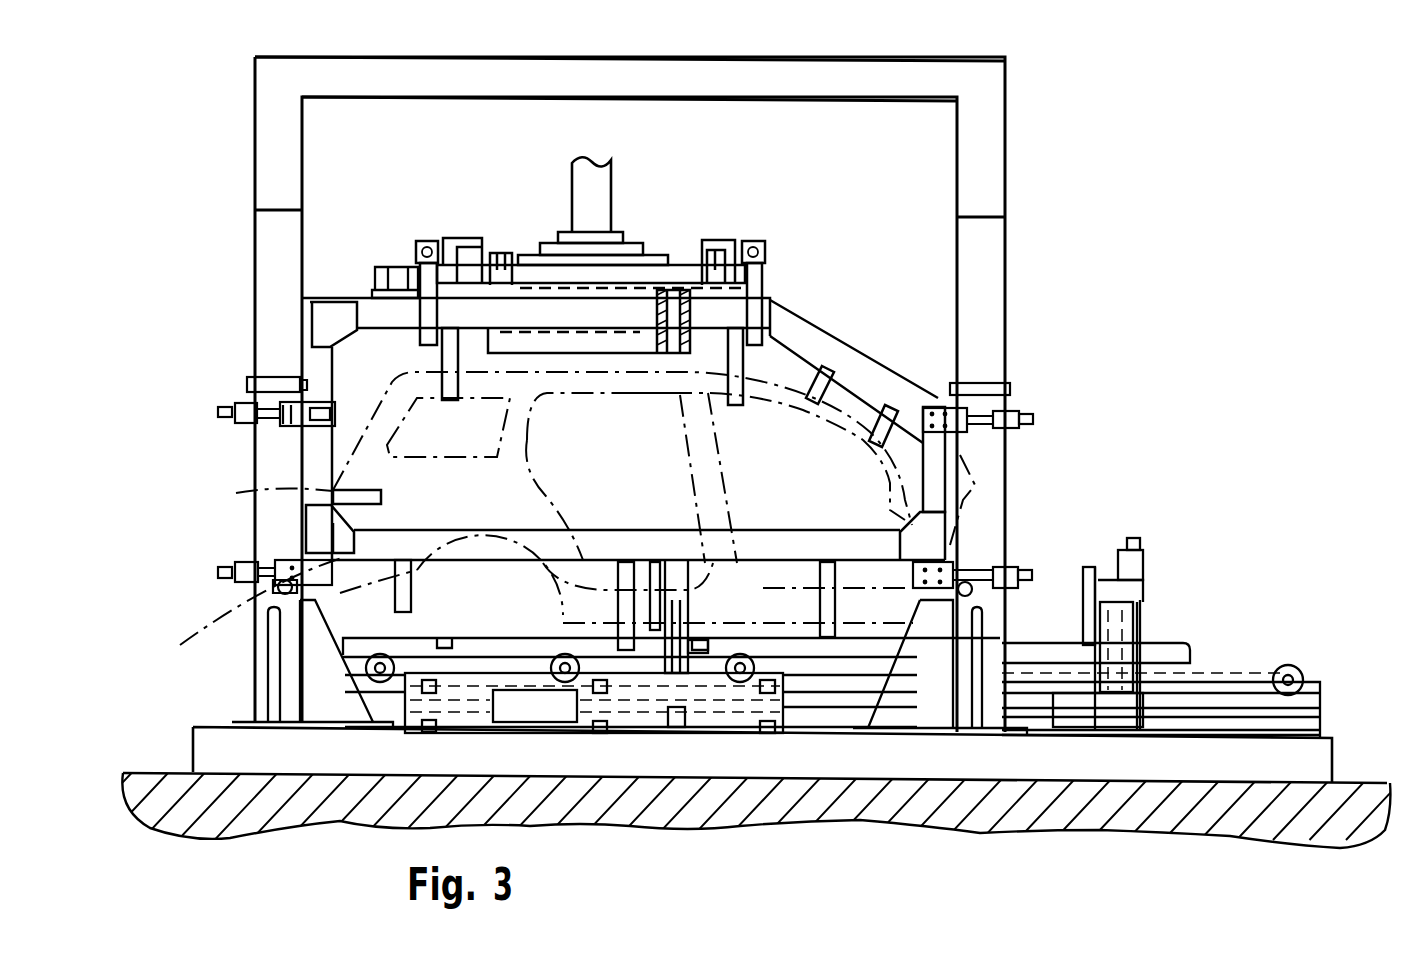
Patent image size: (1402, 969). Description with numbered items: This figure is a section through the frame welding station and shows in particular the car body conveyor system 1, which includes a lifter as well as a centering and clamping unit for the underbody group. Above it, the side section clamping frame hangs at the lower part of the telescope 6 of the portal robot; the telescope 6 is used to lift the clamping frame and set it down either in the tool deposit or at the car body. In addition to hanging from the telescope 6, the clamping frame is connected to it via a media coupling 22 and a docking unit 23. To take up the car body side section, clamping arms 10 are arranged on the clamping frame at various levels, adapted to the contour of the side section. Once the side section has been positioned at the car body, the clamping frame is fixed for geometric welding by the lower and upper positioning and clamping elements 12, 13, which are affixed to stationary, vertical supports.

The car body conveyor system 1 is at (1165, 770).
The telescope 6 is at (590, 183).
The clamping arms 10 is at (340, 497).
The lower positioning and clamping element 12 is at (280, 593).
The upper positioning and clamping element 13 is at (283, 404).
The media coupling 22 is at (383, 280).
The docking unit 23 is at (427, 260).